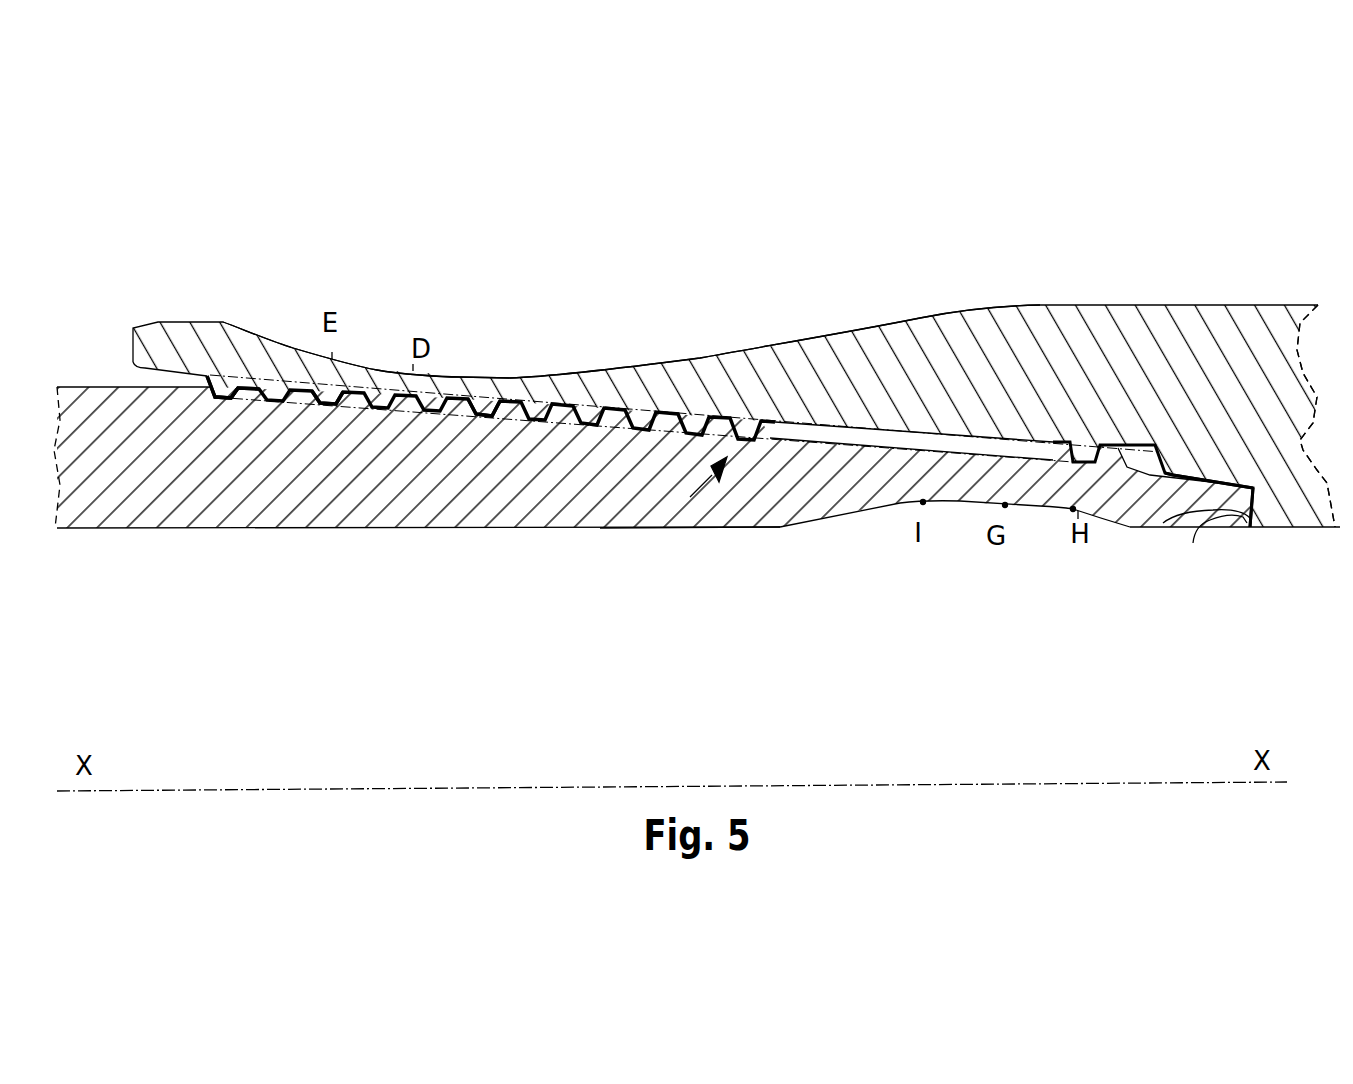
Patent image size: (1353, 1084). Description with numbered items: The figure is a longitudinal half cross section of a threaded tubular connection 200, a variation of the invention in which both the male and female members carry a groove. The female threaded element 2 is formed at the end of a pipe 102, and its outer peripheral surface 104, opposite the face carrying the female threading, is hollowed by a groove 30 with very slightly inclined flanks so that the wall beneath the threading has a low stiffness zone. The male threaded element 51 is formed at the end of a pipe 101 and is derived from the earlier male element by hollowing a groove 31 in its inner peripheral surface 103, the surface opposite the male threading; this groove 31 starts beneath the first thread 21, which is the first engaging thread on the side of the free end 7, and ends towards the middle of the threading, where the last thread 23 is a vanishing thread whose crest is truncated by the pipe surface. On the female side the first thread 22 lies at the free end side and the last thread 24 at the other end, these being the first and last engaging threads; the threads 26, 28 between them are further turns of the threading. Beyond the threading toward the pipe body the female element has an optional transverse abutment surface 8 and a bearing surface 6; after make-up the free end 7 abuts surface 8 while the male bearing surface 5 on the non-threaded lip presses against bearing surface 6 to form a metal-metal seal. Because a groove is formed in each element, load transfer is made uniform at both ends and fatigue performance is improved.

The female threaded element 2 is at (648, 316).
The threaded tubular connection 200 is at (520, 243).
The groove 30 is at (562, 378).
The outer peripheral surface 104 is at (1243, 305).
The pipe 102 is at (1160, 372).
The pipe 101 is at (90, 387).
The inner peripheral surface 103 is at (400, 528).
The male threaded element 51 is at (662, 527).
The groove 31 is at (970, 505).
The thread 23 is at (250, 385).
The first thread 22 is at (227, 395).
The thread groove 26 is at (327, 398).
The thread groove 28 is at (492, 405).
The first thread 21 is at (1117, 447).
The last thread 24 is at (1088, 452).
The bearing surface 6 is at (1163, 523).
The transverse abutment surface 8 is at (1193, 543).
The free end 7 is at (1253, 508).
The bearing surface 5 is at (1225, 483).